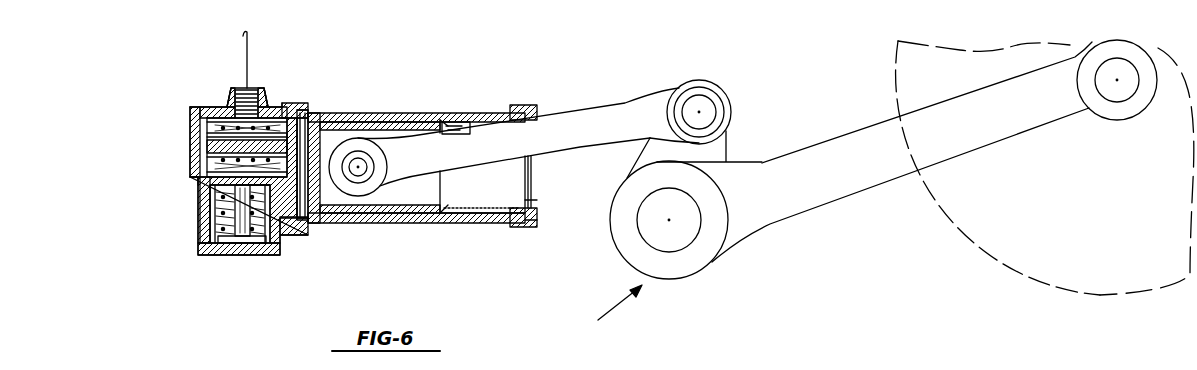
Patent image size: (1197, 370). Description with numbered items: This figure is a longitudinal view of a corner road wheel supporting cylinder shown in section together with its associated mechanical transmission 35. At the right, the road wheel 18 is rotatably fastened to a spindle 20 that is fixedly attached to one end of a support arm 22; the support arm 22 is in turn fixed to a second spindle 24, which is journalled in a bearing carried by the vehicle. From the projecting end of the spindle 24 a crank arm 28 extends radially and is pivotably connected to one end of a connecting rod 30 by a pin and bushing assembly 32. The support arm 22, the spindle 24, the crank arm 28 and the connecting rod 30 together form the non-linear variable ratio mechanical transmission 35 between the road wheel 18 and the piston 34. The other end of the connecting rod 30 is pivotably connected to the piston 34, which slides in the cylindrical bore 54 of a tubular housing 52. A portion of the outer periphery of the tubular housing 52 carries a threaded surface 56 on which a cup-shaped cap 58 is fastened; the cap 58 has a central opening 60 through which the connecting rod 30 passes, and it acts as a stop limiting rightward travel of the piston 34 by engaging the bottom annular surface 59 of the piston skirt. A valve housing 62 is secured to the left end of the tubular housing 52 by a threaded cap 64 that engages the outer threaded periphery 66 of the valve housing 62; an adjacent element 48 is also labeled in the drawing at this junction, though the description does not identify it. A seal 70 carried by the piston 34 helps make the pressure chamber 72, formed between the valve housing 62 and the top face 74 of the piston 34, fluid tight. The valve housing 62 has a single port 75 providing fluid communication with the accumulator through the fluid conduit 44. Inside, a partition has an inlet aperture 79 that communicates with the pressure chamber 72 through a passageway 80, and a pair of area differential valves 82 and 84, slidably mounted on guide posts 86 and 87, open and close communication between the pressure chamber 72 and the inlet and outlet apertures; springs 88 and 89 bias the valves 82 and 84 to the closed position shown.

The road wheel 18 is at (970, 248).
The spindle 20 is at (1124, 102).
The support arm 22 is at (1003, 152).
The second spindle 24 is at (669, 240).
The crank arm 28 is at (748, 140).
The connecting rod 30 is at (627, 103).
The pin and bushing assembly 32 is at (729, 100).
The piston 34 is at (414, 110).
The mechanical transmission 35 is at (610, 313).
The fluid conduit 44 is at (252, 62).
The plate 48 is at (299, 108).
The tubular housing 52 is at (480, 222).
The cylindrical bore 54 is at (468, 124).
The threaded surface 56 is at (530, 230).
The cup-shaped cap 58 is at (538, 221).
The bottom annular surface 59 is at (448, 215).
The central opening 60 is at (536, 204).
The valve housing 62 is at (210, 113).
The threaded cap 64 is at (296, 112).
The outer threaded periphery 66 is at (292, 237).
The seal 70 is at (345, 212).
The pressure chamber 72 is at (304, 140).
The top face 74 is at (312, 222).
The port 75 is at (237, 90).
The inlet aperture 79 is at (188, 180).
The passageway 80 is at (266, 210).
The area differential valve 82 is at (207, 137).
The area differential valve 84 is at (225, 227).
The guide post 86 is at (207, 147).
The guide post 87 is at (238, 238).
The spring 88 is at (220, 128).
The spring 89 is at (225, 207).